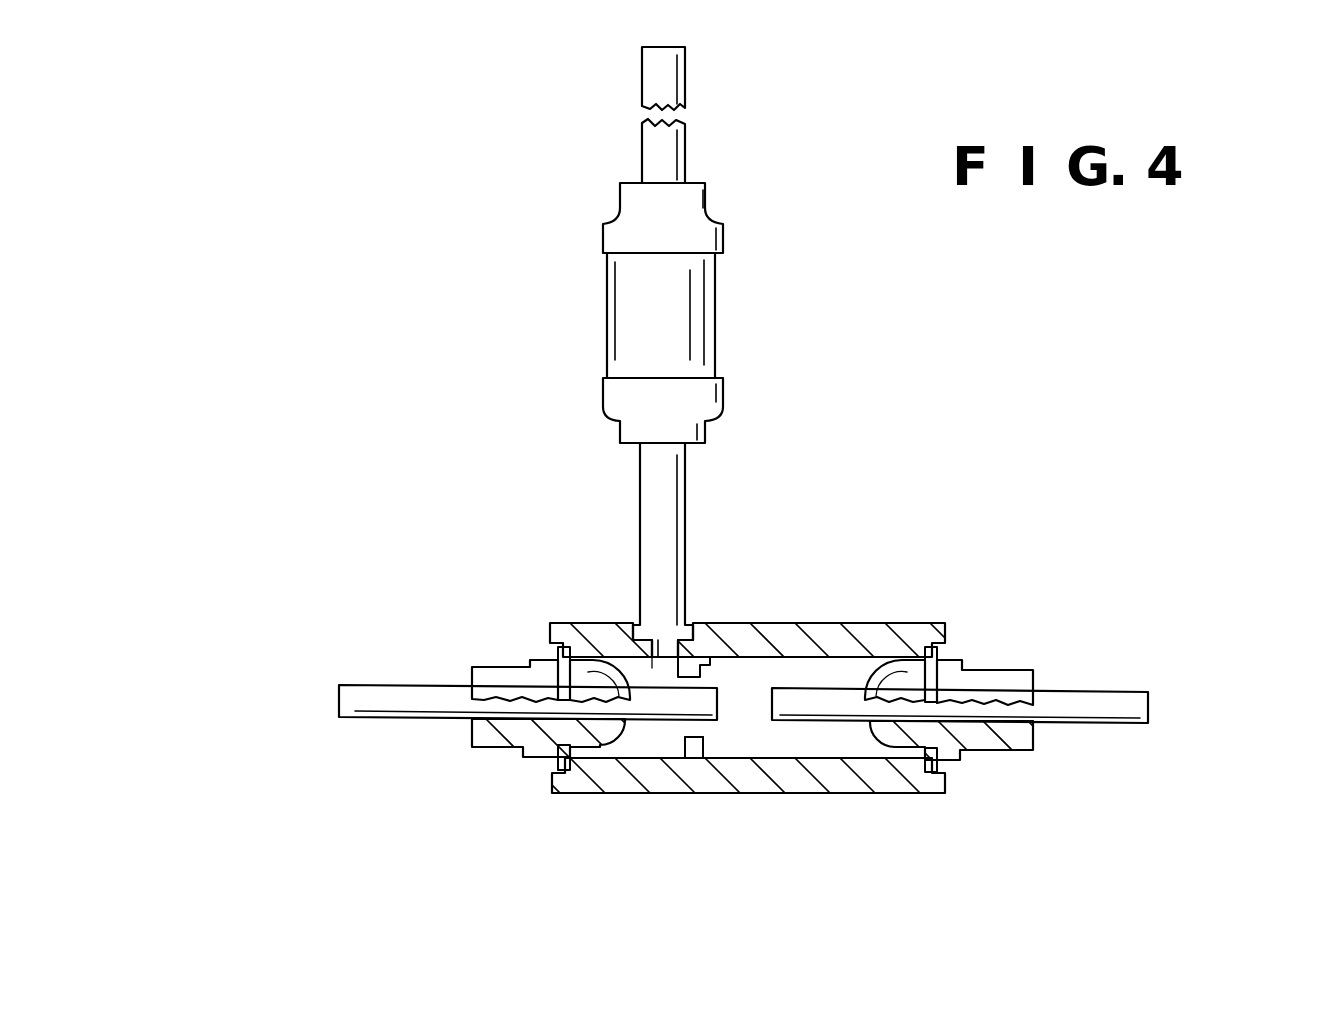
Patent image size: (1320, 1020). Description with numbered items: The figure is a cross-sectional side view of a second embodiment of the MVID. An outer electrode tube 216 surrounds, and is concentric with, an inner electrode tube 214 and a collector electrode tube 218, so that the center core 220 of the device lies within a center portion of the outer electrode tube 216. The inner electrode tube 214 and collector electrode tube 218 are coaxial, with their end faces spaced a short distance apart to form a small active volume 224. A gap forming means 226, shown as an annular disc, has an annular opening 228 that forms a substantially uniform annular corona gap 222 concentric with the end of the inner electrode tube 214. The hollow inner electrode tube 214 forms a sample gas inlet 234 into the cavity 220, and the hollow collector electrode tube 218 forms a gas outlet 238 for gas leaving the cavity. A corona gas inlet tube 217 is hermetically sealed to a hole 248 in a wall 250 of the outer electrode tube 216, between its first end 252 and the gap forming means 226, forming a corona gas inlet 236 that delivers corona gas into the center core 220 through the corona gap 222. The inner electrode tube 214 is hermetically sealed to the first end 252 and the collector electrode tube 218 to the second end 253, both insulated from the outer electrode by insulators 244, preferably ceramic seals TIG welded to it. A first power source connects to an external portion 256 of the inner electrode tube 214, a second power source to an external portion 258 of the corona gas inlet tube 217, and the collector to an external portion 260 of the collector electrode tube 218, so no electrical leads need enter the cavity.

The corona gas inlet 236 is at (662, 48).
The external portion of corona gas inlet tube 258 is at (681, 472).
The corona gas inlet tube 217 is at (685, 492).
The hole 248 is at (660, 655).
The wall 250 is at (590, 642).
The annular corona gap 222 is at (733, 703).
The active volume 224 is at (757, 673).
The center core 220 is at (767, 685).
The insulators 244 is at (488, 665).
The external portion of collector electrode tube 260 is at (1097, 698).
The gas outlet 238 is at (1160, 707).
The sample gas inlet 234 is at (338, 700).
The external portion of inner electrode 256 is at (372, 708).
The inner electrode tube 214 is at (437, 718).
The collector electrode tube 218 is at (1090, 720).
The first end 252 is at (550, 776).
The second end 253 is at (943, 784).
The outer electrode tube 216 is at (717, 783).
The gap forming means 226 is at (703, 740).
The annular opening 228 is at (703, 728).